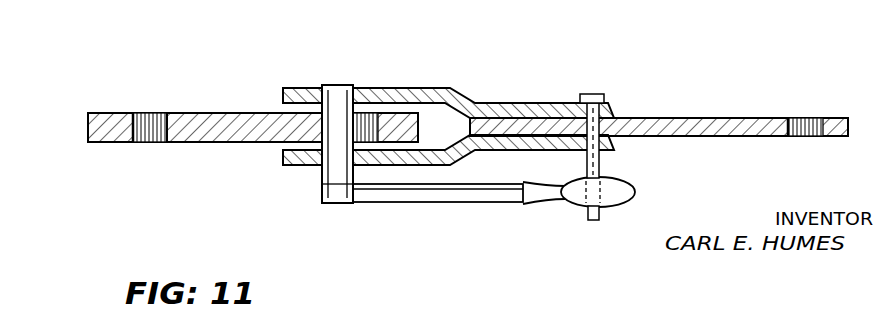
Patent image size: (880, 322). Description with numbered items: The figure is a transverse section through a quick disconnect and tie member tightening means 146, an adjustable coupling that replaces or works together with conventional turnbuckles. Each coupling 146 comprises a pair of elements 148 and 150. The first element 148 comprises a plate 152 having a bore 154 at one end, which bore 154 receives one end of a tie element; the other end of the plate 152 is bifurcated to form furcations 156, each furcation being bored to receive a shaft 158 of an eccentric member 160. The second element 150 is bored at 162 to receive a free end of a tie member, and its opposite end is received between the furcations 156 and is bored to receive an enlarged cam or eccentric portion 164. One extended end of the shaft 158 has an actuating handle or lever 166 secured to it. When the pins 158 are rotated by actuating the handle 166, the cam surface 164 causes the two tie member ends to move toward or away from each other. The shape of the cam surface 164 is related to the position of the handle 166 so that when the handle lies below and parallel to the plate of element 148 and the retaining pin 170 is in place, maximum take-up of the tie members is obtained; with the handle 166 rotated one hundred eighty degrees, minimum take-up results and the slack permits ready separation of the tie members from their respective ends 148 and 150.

The quick disconnect and tie member tightening means 146 is at (303, 67).
The first element 148 is at (682, 117).
The second element 150 is at (215, 113).
The plate 152 is at (653, 137).
The bore 154 is at (810, 117).
The furcations 156 is at (436, 128).
The shaft 158 is at (336, 88).
The eccentric member 160 is at (396, 208).
The bore 162 is at (157, 113).
The cam or eccentric portion 164 is at (267, 146).
The actuating handle or lever 166 is at (580, 196).
The retaining pin 170 is at (590, 94).